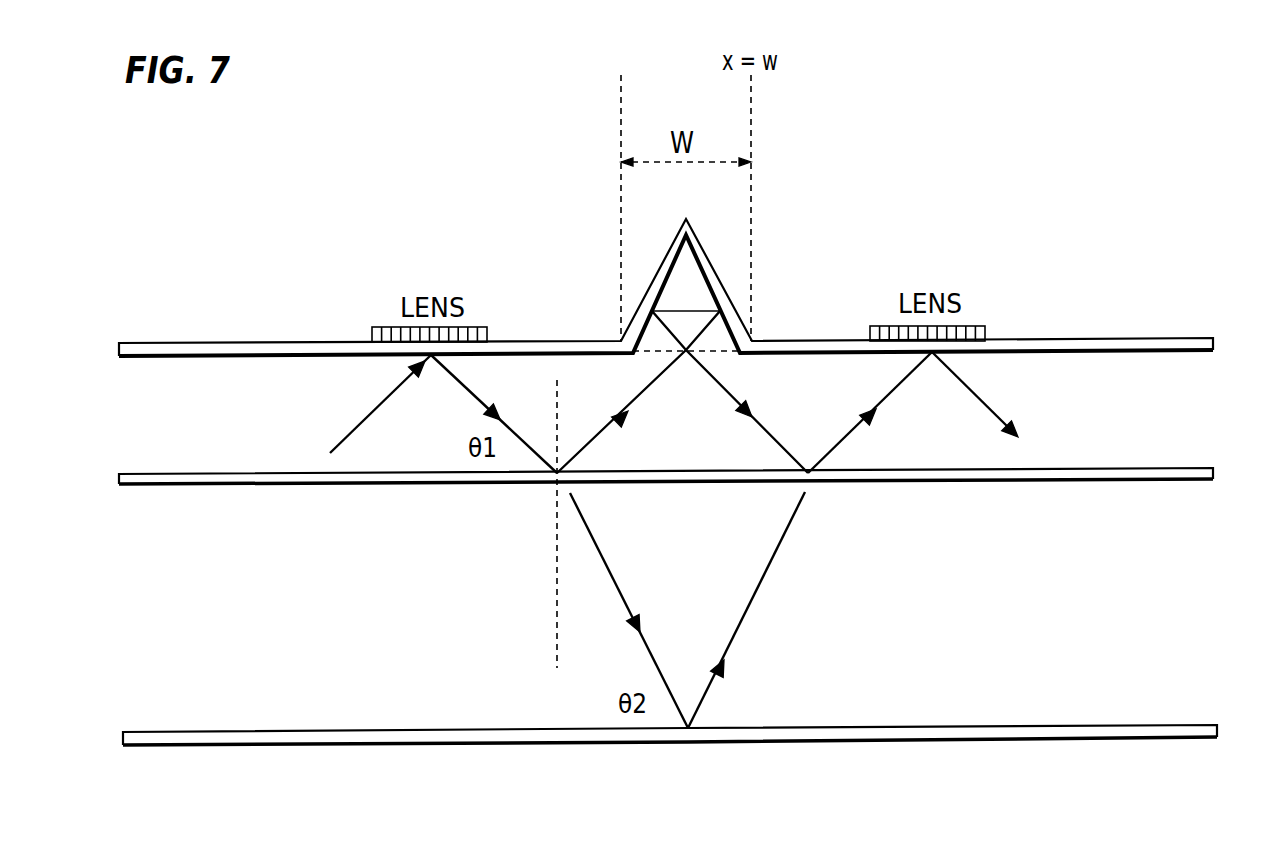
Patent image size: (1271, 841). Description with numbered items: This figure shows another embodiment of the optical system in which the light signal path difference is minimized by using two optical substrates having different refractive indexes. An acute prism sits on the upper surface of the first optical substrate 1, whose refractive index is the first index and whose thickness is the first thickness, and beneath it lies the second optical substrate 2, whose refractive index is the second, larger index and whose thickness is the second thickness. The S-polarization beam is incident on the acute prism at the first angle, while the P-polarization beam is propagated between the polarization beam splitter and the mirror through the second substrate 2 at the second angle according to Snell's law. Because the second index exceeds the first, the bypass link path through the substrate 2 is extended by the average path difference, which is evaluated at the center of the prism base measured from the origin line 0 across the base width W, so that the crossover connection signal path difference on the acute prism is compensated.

The first medium layer (n = n1, thickness t1) 1 is at (1143, 467).
The second medium layer (n = n2, thickness t2) 2 is at (1143, 723).
The x = 0 origin reference line 0 is at (672, 103).